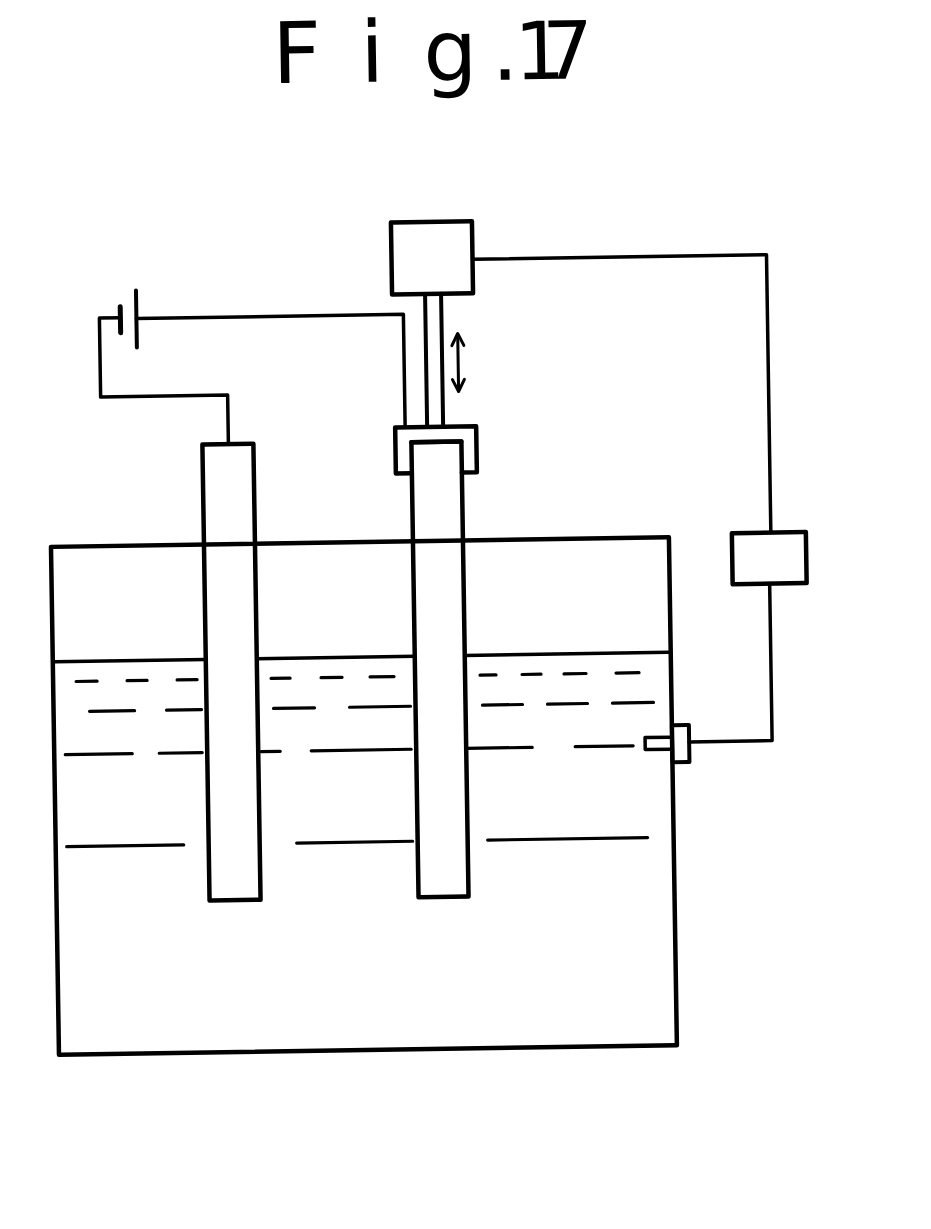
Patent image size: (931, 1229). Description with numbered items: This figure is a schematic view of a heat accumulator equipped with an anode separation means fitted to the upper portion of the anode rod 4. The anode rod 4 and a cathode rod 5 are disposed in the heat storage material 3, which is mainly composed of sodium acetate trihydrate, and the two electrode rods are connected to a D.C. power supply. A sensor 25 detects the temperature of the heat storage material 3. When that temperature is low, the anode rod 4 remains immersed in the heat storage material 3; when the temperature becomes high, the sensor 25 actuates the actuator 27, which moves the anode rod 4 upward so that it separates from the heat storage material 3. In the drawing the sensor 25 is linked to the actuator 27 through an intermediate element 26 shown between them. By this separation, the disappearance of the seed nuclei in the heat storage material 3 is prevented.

The heat storage material 3 is at (652, 909).
The anode rod 4 is at (425, 504).
The cathode rod 5 is at (215, 480).
The sensor 25 is at (681, 770).
The controller 26 is at (812, 562).
The actuator 27 is at (442, 229).